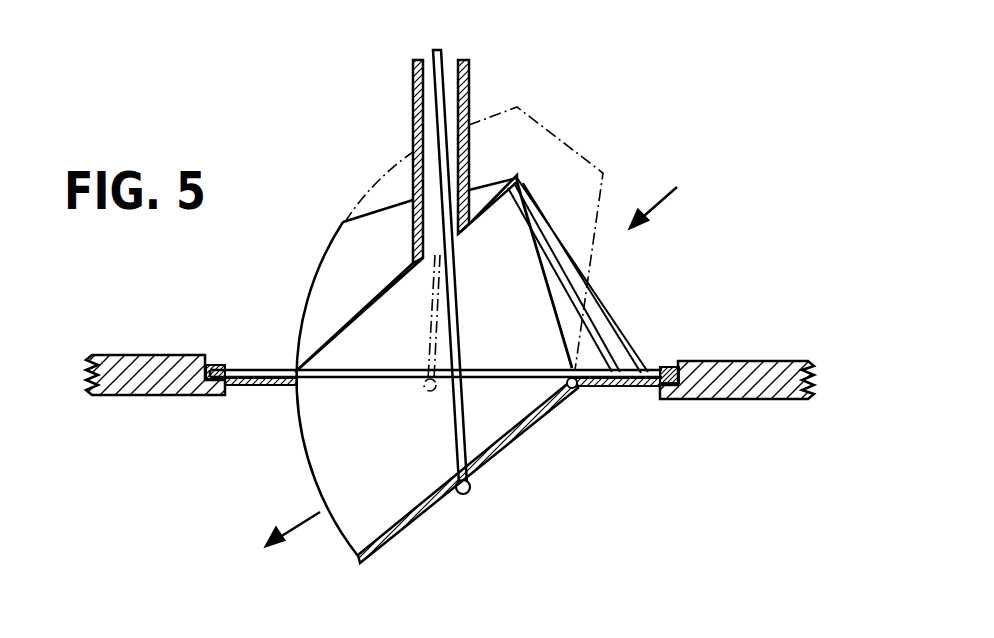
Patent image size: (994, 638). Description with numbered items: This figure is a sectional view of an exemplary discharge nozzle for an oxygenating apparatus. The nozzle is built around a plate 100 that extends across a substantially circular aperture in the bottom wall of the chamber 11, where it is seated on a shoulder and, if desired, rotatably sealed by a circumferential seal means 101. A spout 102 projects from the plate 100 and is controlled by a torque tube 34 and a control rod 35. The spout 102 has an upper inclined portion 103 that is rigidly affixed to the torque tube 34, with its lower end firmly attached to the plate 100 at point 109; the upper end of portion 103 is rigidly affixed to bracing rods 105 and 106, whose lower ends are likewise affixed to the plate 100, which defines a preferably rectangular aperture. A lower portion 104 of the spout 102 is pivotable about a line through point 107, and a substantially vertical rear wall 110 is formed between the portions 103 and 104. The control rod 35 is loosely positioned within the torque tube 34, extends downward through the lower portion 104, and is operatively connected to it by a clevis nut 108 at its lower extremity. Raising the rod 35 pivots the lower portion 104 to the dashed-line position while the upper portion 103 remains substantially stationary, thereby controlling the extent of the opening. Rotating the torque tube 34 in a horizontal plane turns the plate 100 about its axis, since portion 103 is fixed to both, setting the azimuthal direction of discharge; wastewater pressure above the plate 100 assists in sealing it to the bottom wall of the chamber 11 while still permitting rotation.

The chamber 11 is at (720, 400).
The torque tube 34 is at (413, 100).
The control rod 35 is at (436, 50).
The plate 100 is at (267, 368).
The circumferential seal means 101 is at (216, 365).
The spout 102 is at (298, 450).
The upper inclined portion 103 is at (389, 286).
The lower portion 104 is at (433, 513).
The bracing rod 105 is at (600, 303).
The bracing rod 106 is at (600, 347).
The pivot point 107 is at (573, 392).
The clevis nut 108 is at (471, 486).
The attachment point 109 is at (302, 378).
The rear wall 110 is at (395, 487).